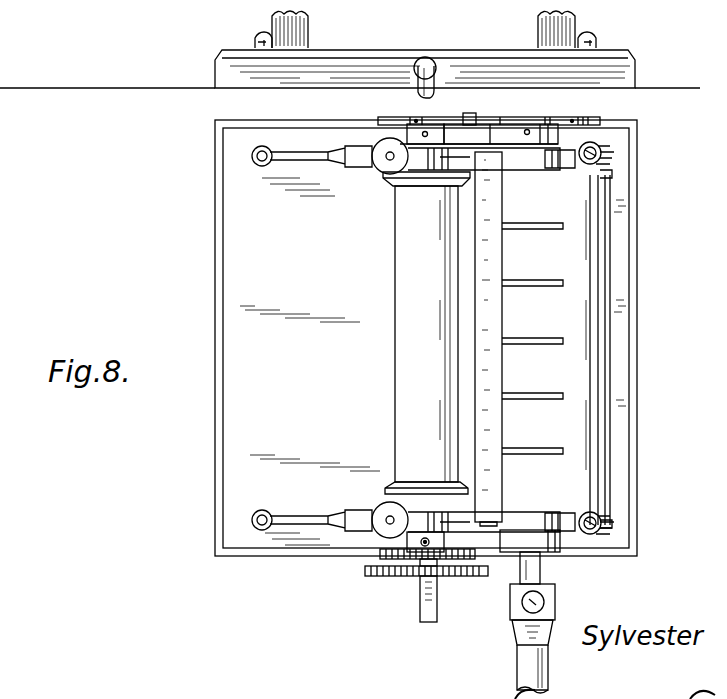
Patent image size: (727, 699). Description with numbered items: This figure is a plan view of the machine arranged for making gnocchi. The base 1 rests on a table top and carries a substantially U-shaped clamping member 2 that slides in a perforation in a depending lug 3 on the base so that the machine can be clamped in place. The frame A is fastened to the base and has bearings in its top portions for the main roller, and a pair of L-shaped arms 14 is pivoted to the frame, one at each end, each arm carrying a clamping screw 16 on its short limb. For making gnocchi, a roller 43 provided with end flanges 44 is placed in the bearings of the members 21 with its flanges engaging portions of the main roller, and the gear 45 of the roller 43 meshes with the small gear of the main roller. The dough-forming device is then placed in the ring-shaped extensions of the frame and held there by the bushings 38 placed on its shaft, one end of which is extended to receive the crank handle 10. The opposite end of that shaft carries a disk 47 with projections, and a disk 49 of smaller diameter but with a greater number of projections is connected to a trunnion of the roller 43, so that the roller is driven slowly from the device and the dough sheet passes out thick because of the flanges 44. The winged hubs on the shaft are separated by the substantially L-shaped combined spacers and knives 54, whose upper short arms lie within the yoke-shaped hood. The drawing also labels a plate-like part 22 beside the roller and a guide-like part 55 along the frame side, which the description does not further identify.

The base 1 is at (225, 55).
The clamping member 2 is at (438, 60).
The depending lug 3 is at (427, 57).
The crank handle 10 is at (525, 656).
The L-shaped arms 14 is at (345, 166).
The clamping screw 16 is at (382, 170).
The members 21 is at (570, 166).
The plate 22 is at (492, 313).
The bushings 38 is at (512, 140).
The roller 43 is at (400, 368).
The end flanges 44 is at (388, 184).
The gear 45 is at (375, 560).
The disk 47 is at (582, 118).
The disk 49 is at (386, 118).
The combined spacers and knives 54 is at (528, 230).
The guide rail 55 is at (598, 252).
The frame A is at (600, 150).